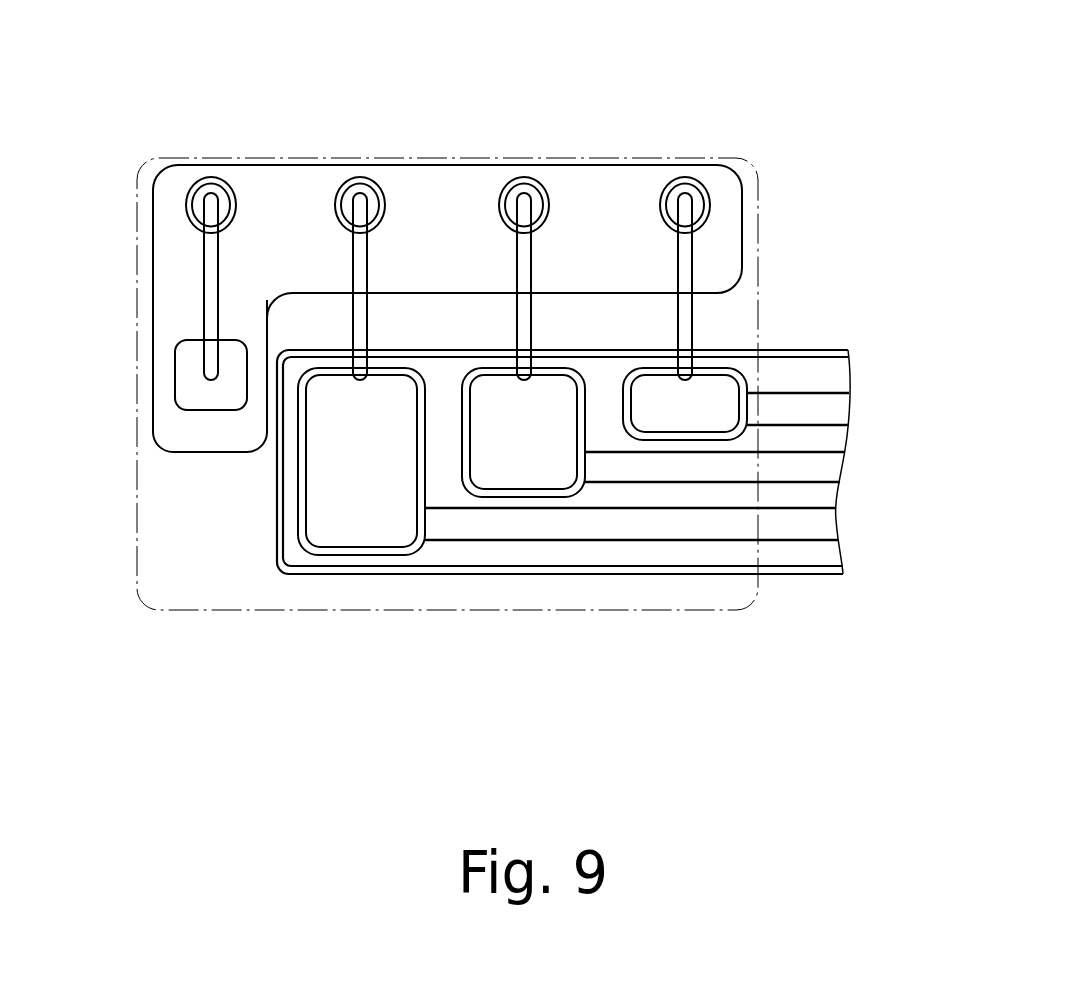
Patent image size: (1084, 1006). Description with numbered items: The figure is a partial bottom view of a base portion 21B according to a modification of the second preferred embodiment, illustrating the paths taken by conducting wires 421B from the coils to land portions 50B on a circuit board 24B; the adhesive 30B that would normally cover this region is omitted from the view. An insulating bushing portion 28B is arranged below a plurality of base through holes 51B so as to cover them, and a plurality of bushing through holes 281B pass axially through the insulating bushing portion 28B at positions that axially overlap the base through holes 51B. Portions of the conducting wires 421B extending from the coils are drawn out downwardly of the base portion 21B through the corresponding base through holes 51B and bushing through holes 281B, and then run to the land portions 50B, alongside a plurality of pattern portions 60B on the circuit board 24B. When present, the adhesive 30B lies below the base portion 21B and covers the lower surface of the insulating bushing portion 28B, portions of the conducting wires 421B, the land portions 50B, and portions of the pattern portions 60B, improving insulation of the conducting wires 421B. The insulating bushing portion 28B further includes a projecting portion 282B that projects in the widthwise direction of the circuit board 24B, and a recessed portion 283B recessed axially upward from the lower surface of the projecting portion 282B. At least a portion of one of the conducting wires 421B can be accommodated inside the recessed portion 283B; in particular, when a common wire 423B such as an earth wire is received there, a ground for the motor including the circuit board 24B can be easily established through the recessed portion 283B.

The base portion 21B is at (379, 118).
The insulating bushing portion 28B is at (600, 195).
The bushing through hole 281B is at (526, 181).
The projecting portion 282B is at (205, 433).
The recessed portion 283B is at (189, 358).
The common wire 423B is at (212, 293).
The conducting wire 421B is at (685, 333).
The base through hole 51B is at (687, 181).
The circuit board 24B is at (821, 380).
The adhesive 30B is at (253, 523).
The land portion 50B is at (525, 465).
The pattern portion 60B is at (658, 465).